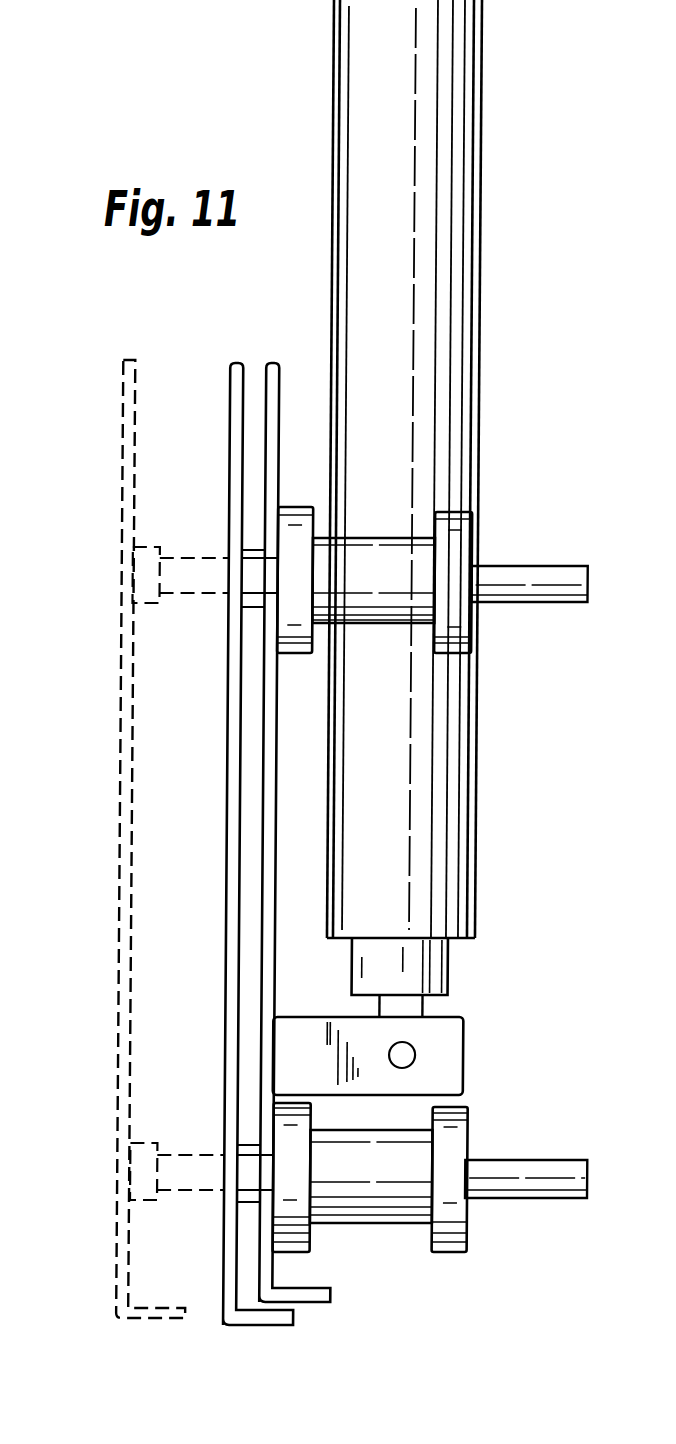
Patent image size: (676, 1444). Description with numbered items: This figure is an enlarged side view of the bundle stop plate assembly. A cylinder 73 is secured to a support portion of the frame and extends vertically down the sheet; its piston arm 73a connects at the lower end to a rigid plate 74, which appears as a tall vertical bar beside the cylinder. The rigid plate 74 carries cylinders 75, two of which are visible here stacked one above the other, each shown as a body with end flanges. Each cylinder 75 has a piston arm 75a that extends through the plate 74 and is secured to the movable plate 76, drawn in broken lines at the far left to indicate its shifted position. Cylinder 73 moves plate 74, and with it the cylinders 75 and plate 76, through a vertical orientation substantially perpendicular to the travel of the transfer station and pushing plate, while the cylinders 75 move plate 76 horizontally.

The cylinder 73 is at (467, 268).
The piston arm 73a is at (437, 1003).
The rigid plate 74 is at (275, 987).
The cylinders 75 is at (462, 545).
The piston arms 75a is at (544, 590).
The movable plate 76 is at (127, 955).